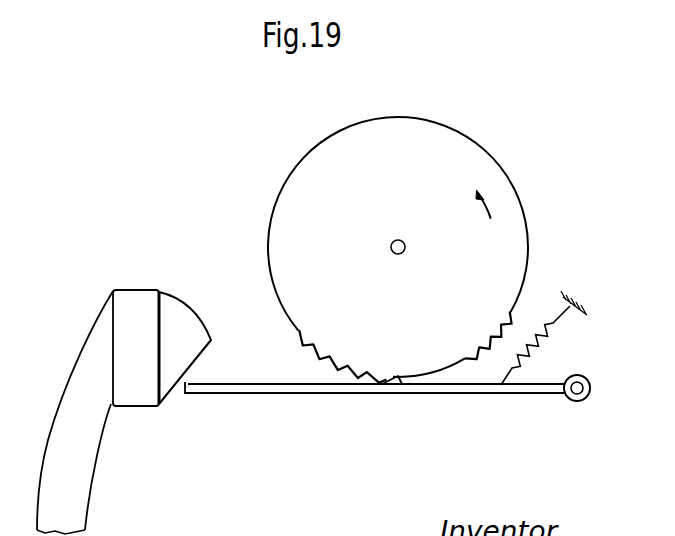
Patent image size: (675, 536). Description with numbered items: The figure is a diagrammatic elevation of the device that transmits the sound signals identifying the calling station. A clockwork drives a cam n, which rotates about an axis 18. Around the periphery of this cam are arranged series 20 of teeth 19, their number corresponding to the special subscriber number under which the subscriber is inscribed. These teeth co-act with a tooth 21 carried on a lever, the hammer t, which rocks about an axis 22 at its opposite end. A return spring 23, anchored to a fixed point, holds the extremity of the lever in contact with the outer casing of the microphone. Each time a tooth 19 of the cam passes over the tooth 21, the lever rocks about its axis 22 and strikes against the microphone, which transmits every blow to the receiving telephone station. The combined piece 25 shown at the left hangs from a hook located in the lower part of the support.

The axis 18 is at (391, 246).
The teeth 19 is at (338, 339).
The series of teeth 20 is at (303, 335).
The tooth 21 is at (397, 383).
The axis 22 is at (590, 387).
The return spring 23 is at (540, 345).
The combined piece 25 is at (90, 380).
The hammer t is at (287, 388).